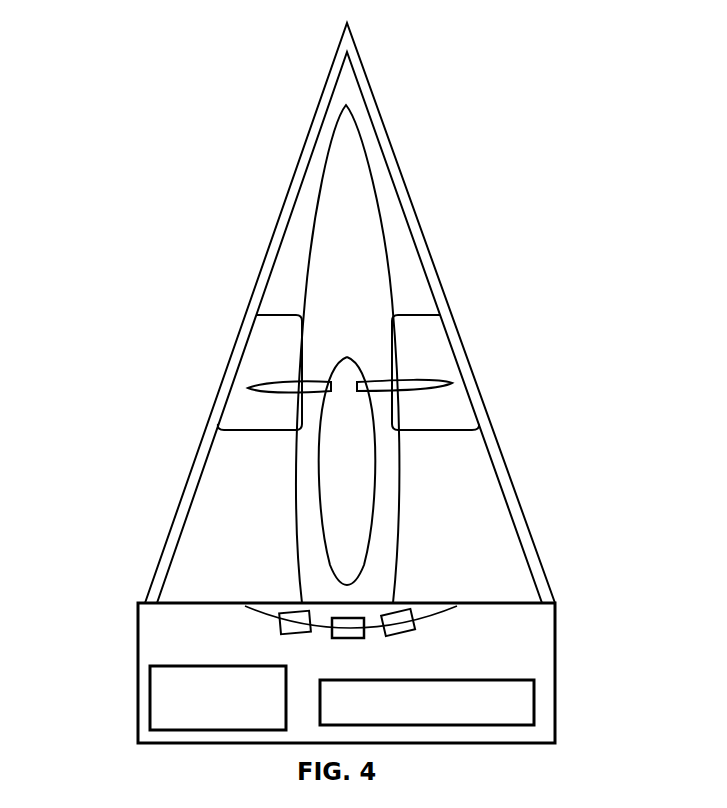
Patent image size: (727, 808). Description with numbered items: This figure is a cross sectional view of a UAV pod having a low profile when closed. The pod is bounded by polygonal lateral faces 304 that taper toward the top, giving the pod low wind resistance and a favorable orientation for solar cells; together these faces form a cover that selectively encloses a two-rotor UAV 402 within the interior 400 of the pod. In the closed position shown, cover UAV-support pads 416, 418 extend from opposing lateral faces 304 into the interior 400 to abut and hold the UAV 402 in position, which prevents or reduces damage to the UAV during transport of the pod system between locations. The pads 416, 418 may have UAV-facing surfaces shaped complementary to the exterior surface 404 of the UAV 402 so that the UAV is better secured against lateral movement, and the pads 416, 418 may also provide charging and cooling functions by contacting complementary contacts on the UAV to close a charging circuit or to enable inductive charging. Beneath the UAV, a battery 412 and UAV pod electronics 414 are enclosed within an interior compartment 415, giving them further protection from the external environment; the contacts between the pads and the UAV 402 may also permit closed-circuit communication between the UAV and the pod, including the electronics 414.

The polygonal lateral faces 304 is at (368, 74).
The interior 400 is at (408, 287).
The UAV 402 is at (346, 205).
The exterior surface 404 is at (300, 464).
The battery 412 is at (148, 700).
The UAV pod electronics 414 is at (533, 701).
The interior compartment 415 is at (527, 645).
The cover UAV-support pad 416 is at (277, 352).
The cover UAV-support pad 418 is at (422, 357).